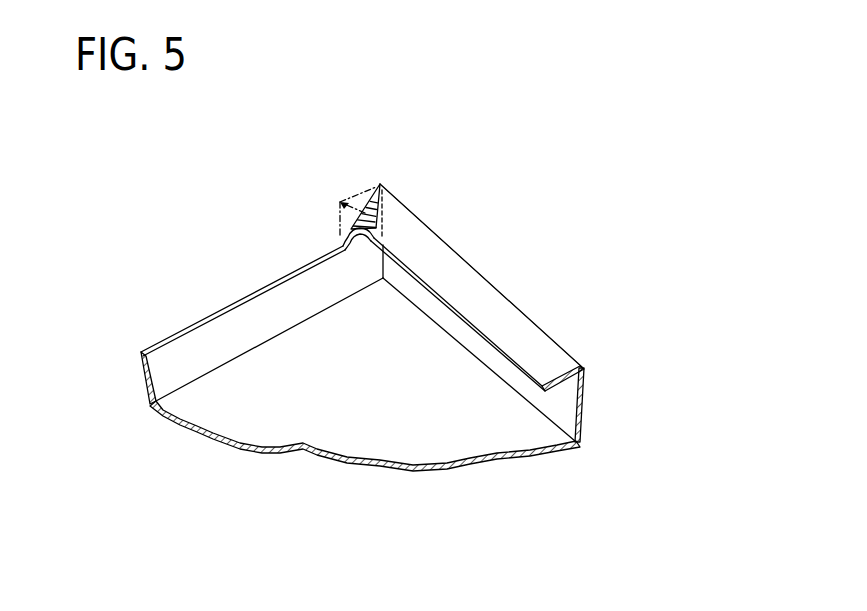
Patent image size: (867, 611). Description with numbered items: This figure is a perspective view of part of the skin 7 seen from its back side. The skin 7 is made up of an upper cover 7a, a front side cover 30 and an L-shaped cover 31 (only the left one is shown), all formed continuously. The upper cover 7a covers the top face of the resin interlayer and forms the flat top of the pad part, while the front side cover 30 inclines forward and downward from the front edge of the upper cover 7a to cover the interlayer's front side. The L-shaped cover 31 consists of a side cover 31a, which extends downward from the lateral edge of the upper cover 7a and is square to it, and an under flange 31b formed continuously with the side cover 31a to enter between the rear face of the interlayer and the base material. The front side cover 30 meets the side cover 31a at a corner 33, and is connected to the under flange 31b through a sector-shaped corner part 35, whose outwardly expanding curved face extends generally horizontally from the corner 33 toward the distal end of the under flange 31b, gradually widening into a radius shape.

The skin 7 is at (317, 457).
The upper cover 7a is at (430, 408).
The front side cover 30 is at (225, 335).
The L-shaped cover 31 is at (700, 305).
The side cover 31a is at (560, 398).
The under flange 31b is at (543, 352).
The corner 33 is at (380, 182).
The sector-shaped corner part 35 is at (365, 208).